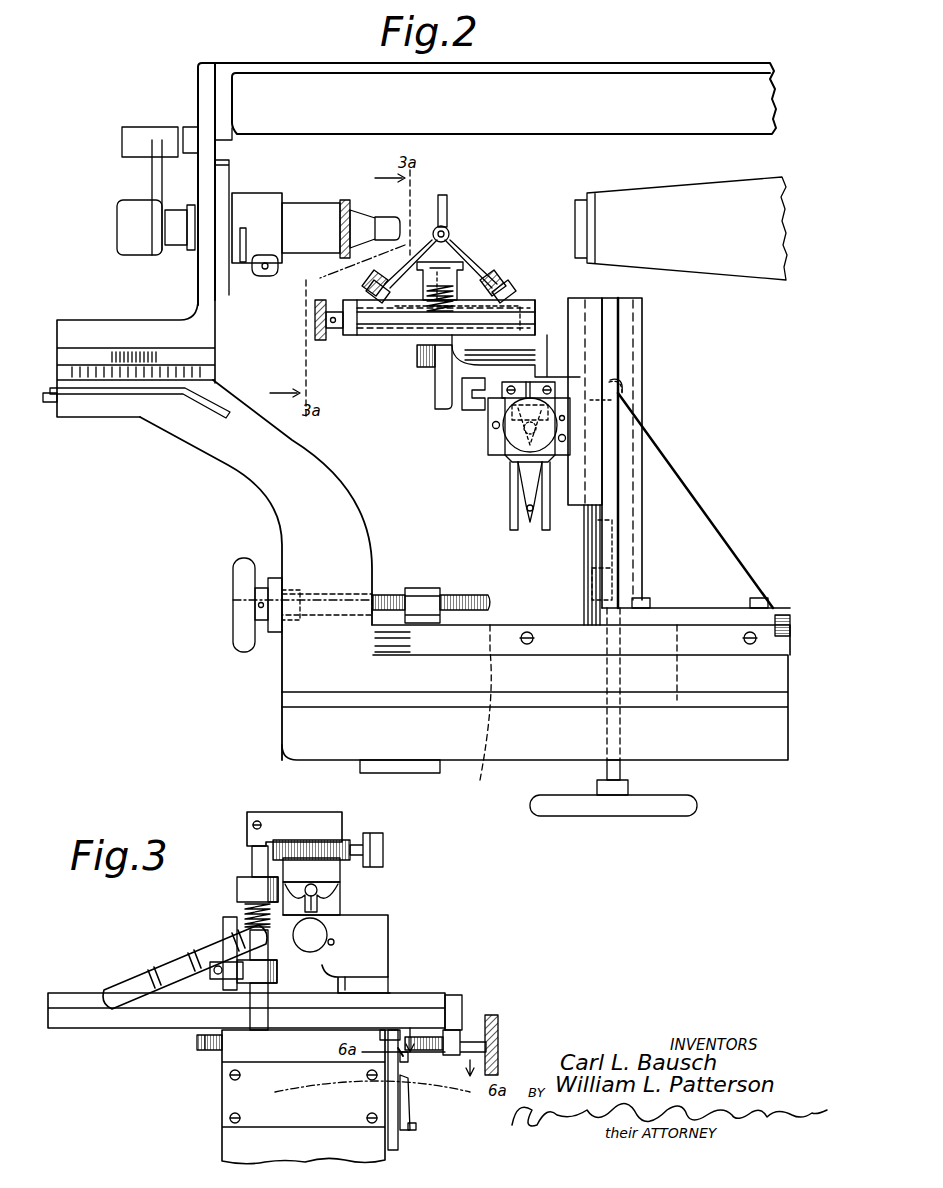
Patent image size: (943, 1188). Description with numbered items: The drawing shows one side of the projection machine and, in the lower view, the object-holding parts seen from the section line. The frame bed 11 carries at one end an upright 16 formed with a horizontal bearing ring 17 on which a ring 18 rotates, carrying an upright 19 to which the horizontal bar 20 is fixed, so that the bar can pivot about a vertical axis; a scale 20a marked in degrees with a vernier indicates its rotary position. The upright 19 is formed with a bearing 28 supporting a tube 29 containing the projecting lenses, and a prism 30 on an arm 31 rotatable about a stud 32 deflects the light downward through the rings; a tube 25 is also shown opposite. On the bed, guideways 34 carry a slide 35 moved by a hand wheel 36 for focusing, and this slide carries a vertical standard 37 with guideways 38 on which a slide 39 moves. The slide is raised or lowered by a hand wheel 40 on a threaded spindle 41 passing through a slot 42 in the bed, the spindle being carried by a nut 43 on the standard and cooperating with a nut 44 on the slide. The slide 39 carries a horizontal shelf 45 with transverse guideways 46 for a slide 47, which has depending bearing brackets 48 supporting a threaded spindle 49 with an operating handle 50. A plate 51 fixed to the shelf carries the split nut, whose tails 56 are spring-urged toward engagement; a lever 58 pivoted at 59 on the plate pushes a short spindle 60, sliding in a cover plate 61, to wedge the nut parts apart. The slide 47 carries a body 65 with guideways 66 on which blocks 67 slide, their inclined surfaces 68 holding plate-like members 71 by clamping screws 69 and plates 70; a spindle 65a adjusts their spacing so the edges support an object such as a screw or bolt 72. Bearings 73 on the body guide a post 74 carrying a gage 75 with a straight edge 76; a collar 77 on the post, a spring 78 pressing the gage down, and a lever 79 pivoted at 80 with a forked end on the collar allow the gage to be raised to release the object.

In FIG. 2, the bed 11 is at (762, 752).
In FIG. 2, the upright 16 is at (258, 480).
In FIG. 2, the bearing ring 17 is at (57, 373).
In FIG. 2, the ring 18 is at (57, 355).
In FIG. 2, the upright 19 is at (198, 107).
In FIG. 2, the bar 20 is at (547, 112).
In FIG. 2, the scale 20a is at (128, 380).
In FIG. 2, the lens tube 25 is at (741, 184).
In FIG. 2, the bearing 28 is at (255, 197).
In FIG. 2, the tube 29 is at (300, 250).
In FIG. 2, the prism 30 is at (117, 219).
In FIG. 2, the arm 31 is at (152, 170).
In FIG. 2, the stud 32 is at (186, 140).
In FIG. 2, the guideways 34 is at (783, 615).
In FIG. 2, the slide 35 is at (696, 639).
In FIG. 2, the hand wheel 36 is at (233, 570).
In FIG. 2, the vertical standard 37 is at (642, 345).
In FIG. 3, the vertical standard 37 is at (232, 1143).
In FIG. 2, the guideways 38 is at (583, 590).
In FIG. 2, the slide 39 is at (578, 506).
In FIG. 3, the slide 39 is at (388, 937).
In FIG. 2, the hand wheel 40 is at (592, 808).
In FIG. 2, the threaded spindle 41 is at (625, 775).
In FIG. 2, the slot 42 is at (489, 713).
In FIG. 2, the nut 43 is at (592, 585).
In FIG. 2, the nut 44 is at (648, 442).
In FIG. 2, the horizontal shelf 45 is at (510, 440).
In FIG. 2, the guideways 46 is at (505, 412).
In FIG. 2, the slide 47 is at (498, 402).
In FIG. 3, the slide 47 is at (440, 993).
In FIG. 3, the bearing brackets 48 is at (455, 1033).
In FIG. 3, the threaded spindle 49 is at (450, 1037).
In FIG. 2, the operating handle 50 is at (520, 470).
In FIG. 3, the operating handle 50 is at (500, 1025).
In FIG. 2, the plate 51 is at (500, 455).
In FIG. 3, the plate 51 is at (392, 1030).
In FIG. 2, the extensions 56 is at (513, 520).
In FIG. 2, the lever 58 is at (520, 492).
In FIG. 3, the lever 58 is at (410, 1110).
In FIG. 3, the pivot 59 is at (388, 1082).
In FIG. 3, the short spindle 60 is at (408, 1062).
In FIG. 3, the cover plate 61 is at (398, 1054).
In FIG. 2, the body 65 is at (535, 330).
In FIG. 2, the spindle 65a is at (322, 300).
In FIG. 3, the spindle 65a is at (328, 946).
In FIG. 2, the guideways 66 is at (530, 312).
In FIG. 2, the blocks 67 is at (522, 300).
In FIG. 2, the inclined surfaces 68 is at (452, 298).
In FIG. 3, the inclined surfaces 68 is at (332, 908).
In FIG. 2, the clamping screws 69 is at (500, 278).
In FIG. 3, the clamping screws 69 is at (338, 896).
In FIG. 2, the plates 70 is at (480, 268).
In FIG. 3, the plates 70 is at (330, 884).
In FIG. 2, the plate-like members 71 is at (455, 262).
In FIG. 3, the plate-like members 71 is at (340, 868).
In FIG. 2, the screw or bolt 72 is at (450, 232).
In FIG. 3, the screw or bolt 72 is at (360, 836).
In FIG. 2, the bearings 73 is at (426, 368).
In FIG. 3, the bearings 73 is at (237, 888).
In FIG. 2, the post 74 is at (440, 402).
In FIG. 3, the post 74 is at (252, 865).
In FIG. 2, the gage 75 is at (447, 210).
In FIG. 3, the gage 75 is at (290, 812).
In FIG. 3, the straight edge 76 is at (316, 840).
In FIG. 3, the collar 77 is at (285, 952).
In FIG. 2, the spring 78 is at (437, 312).
In FIG. 3, the spring 78 is at (245, 912).
In FIG. 3, the lever 79 is at (140, 975).
In FIG. 3, the pivot 80 is at (211, 975).